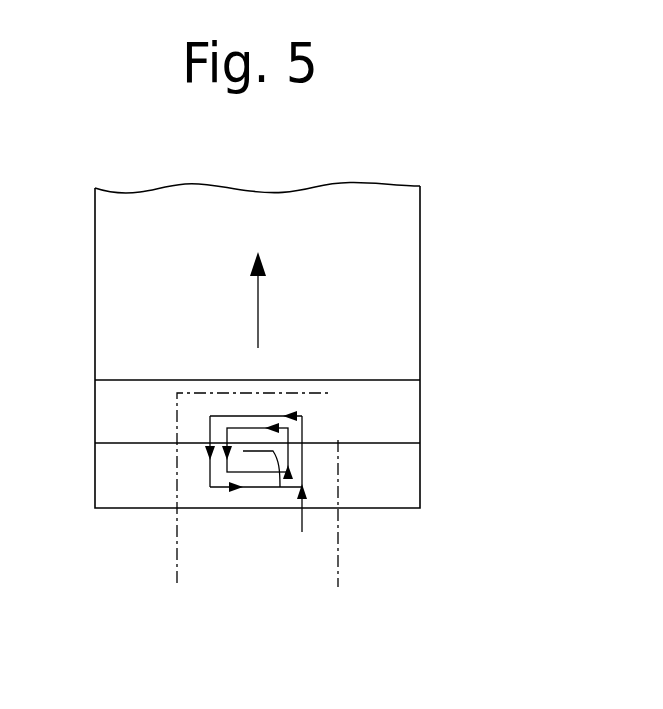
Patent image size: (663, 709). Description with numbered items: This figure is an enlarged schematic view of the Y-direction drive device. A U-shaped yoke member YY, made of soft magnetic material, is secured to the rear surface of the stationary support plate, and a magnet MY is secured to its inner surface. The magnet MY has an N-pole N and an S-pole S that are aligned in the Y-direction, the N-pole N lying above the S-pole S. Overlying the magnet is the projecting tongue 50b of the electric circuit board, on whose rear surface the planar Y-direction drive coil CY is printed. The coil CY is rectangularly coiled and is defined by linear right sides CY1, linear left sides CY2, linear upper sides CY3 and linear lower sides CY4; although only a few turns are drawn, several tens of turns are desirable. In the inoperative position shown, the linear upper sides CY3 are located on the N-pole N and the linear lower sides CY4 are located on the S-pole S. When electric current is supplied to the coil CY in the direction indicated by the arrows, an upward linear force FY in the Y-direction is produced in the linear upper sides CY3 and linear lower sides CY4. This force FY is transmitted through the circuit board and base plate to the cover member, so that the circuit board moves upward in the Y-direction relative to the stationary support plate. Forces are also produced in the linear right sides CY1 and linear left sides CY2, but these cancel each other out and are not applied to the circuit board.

The yoke member YY is at (393, 288).
The magnet MY is at (407, 493).
The N-pole N is at (132, 412).
The S-pole S is at (131, 477).
The upward linear force FY is at (262, 284).
The projecting tongue 50b is at (284, 395).
The linear right sides CY1 is at (288, 445).
The linear left sides CY2 is at (210, 418).
The linear upper sides CY3 is at (165, 355).
The linear lower sides CY4 is at (262, 472).
The Y-direction drive coil CY is at (370, 545).